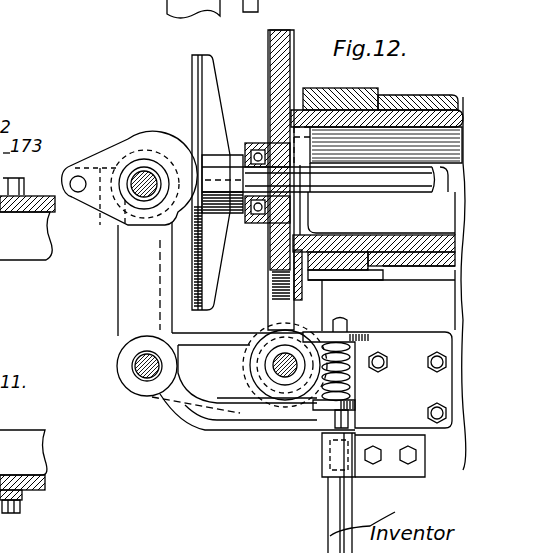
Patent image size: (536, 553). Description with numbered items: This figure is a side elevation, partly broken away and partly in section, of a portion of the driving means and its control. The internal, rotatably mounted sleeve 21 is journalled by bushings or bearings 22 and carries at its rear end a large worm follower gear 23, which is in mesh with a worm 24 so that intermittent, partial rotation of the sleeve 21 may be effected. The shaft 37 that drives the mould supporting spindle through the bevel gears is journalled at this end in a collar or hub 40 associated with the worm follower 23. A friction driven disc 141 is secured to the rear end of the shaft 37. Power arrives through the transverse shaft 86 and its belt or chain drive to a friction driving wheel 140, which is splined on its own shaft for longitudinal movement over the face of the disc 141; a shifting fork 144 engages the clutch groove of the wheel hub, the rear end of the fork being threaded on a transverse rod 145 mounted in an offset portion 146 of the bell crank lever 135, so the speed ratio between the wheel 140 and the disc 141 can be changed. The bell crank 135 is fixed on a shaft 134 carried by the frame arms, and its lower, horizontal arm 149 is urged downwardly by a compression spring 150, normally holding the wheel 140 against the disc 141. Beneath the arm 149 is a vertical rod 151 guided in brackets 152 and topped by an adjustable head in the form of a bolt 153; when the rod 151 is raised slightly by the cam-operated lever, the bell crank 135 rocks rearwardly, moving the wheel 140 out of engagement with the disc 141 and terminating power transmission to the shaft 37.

The sleeve 21 is at (398, 116).
The bushings or bearings 22 is at (318, 100).
The worm follower gear 23 is at (285, 40).
The worm 24 is at (247, 362).
The shaft 37 is at (410, 180).
The collar or hub 40 is at (262, 224).
The transverse shaft 86 is at (270, 368).
The shaft 134 is at (140, 374).
The bell crank lever 135 is at (135, 295).
The friction driving wheel 140 is at (176, 121).
The friction driven disc 141 is at (192, 73).
The shifting fork 144 is at (134, 152).
The transverse rod 145 is at (73, 177).
The offset portion 146 is at (97, 202).
The lower horizontal arm 149 is at (243, 420).
The compression spring 150 is at (352, 378).
The vertical rod 151 is at (342, 514).
The brackets 152 is at (333, 458).
The bolt 153 is at (335, 418).